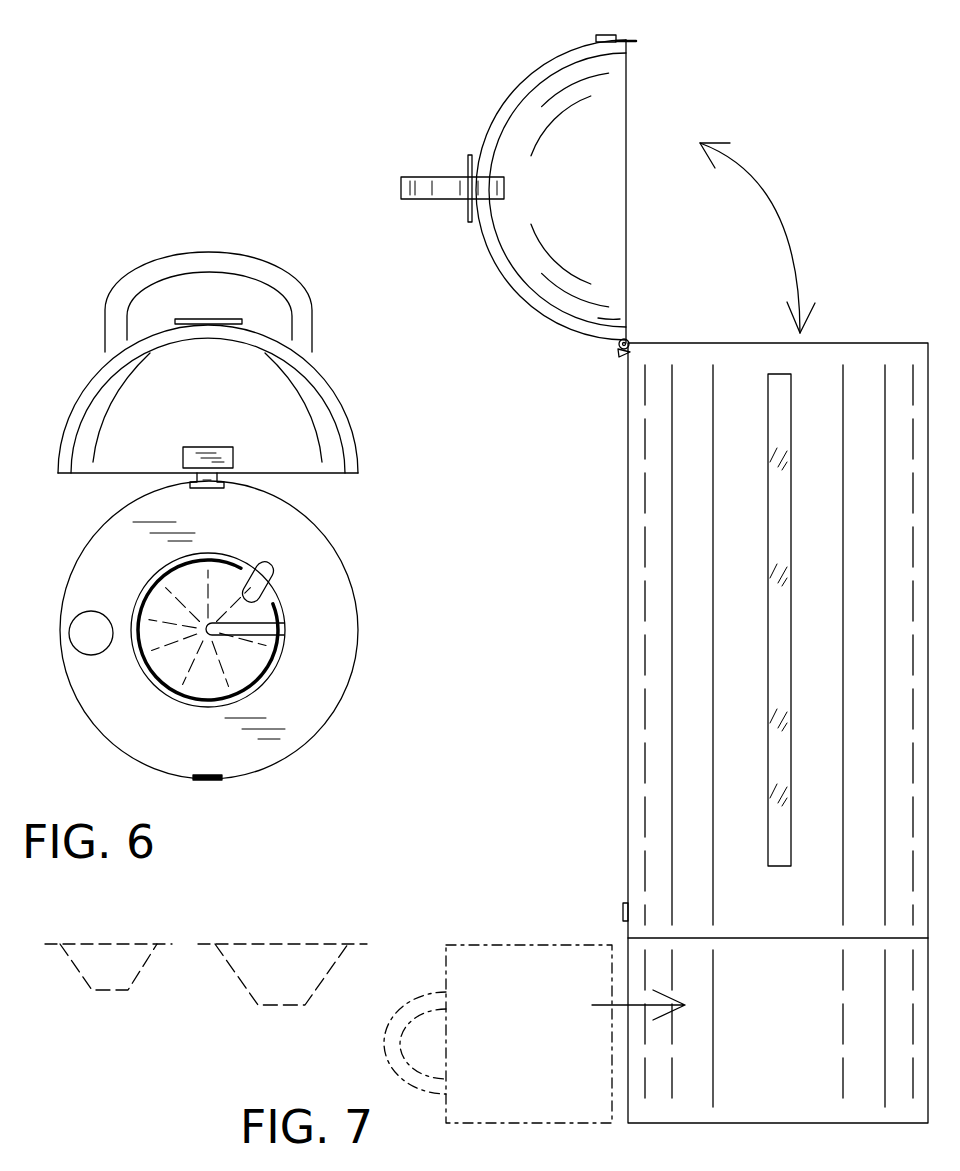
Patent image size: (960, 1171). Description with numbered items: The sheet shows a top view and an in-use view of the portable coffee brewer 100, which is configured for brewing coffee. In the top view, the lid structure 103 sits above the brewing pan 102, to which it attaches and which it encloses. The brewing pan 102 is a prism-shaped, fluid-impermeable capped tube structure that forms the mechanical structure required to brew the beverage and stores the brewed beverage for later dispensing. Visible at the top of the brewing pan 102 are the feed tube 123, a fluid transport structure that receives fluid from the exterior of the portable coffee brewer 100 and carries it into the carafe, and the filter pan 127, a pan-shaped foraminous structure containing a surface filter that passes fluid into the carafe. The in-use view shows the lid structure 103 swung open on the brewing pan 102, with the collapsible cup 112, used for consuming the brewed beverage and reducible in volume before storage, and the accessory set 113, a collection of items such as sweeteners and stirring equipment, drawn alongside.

In FIG. 7, the portable coffee brewer 100 is at (866, 303).
In FIG. 6, the brewing pan 102 is at (345, 624).
In FIG. 6, the lid structure 103 is at (340, 392).
In FIG. 7, the collapsible cup 112 is at (492, 934).
In FIG. 7, the accessory set 113 is at (148, 938).
In FIG. 6, the feed tube 123 is at (90, 632).
In FIG. 6, the filter pan 127 is at (253, 617).